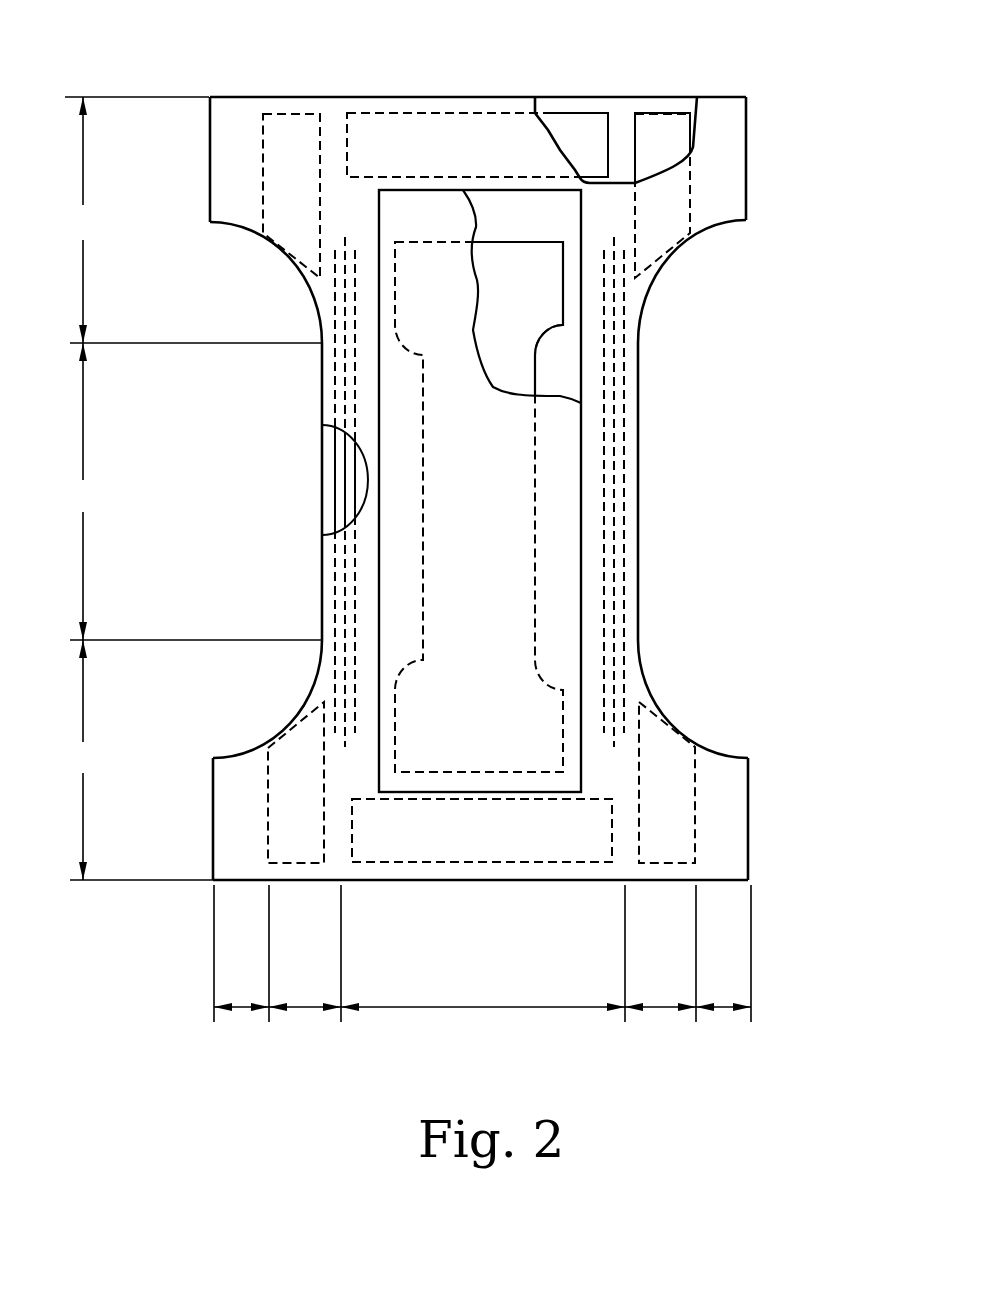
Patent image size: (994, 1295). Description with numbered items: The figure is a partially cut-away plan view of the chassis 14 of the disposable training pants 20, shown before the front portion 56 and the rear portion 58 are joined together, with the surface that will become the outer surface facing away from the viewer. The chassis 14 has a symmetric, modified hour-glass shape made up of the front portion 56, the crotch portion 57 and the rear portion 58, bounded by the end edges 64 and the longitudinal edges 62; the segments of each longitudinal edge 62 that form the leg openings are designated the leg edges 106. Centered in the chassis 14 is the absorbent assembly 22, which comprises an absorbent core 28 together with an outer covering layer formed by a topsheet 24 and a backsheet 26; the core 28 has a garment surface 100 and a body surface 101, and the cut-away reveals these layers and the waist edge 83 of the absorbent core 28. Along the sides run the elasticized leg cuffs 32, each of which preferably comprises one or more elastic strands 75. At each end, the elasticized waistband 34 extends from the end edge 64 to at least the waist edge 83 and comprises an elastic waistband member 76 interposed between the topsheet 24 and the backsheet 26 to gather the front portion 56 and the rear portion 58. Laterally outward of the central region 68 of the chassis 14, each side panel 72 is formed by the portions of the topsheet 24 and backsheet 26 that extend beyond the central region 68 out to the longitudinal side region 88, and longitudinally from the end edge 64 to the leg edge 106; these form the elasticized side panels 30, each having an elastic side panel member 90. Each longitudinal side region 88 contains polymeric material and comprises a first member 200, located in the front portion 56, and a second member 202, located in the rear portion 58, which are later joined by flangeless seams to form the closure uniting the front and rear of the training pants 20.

The disposable training pants 20 is at (480, 498).
The chassis 14 is at (660, 532).
The absorbent assembly 22 is at (465, 690).
The topsheet 24 is at (420, 229).
The backsheet 26 is at (520, 229).
The absorbent core 28 is at (505, 610).
The elasticized side panels 30 is at (280, 160).
The elasticized leg cuff 32 is at (340, 323).
The elasticized waistband 34 is at (418, 125).
The front portion 56 is at (193, 220).
The crotch portion 57 is at (193, 491).
The rear portion 58 is at (138, 760).
The longitudinal edge 62 is at (320, 392).
The end edge 64 is at (445, 97).
The central region 68 is at (483, 1010).
The side panel 72 is at (305, 1010).
The elastic strands 75 is at (355, 503).
The elastic waistband member 76 is at (596, 148).
The waist edge 83 is at (488, 190).
The longitudinal side region 88 is at (243, 1010).
The elastic side panel member 90 is at (672, 148).
The garment surface 100 is at (495, 450).
The body surface 101 is at (528, 305).
The leg edge 106 is at (715, 228).
The first member 200 is at (230, 195).
The second member 202 is at (228, 782).